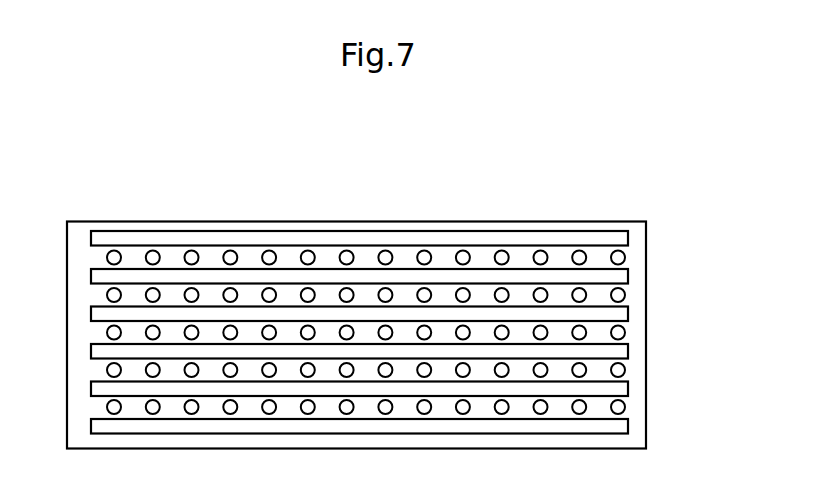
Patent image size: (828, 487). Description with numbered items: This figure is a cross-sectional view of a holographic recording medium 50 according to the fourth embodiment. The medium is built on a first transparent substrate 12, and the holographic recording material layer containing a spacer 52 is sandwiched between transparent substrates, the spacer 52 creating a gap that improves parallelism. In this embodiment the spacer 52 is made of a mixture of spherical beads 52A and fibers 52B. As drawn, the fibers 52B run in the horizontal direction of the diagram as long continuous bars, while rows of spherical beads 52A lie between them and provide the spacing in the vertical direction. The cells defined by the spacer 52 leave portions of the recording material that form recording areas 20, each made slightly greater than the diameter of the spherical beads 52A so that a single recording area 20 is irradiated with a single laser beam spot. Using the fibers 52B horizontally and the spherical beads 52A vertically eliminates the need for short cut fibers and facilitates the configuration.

The holographic recording medium 50 is at (385, 303).
The first transparent substrate 12 is at (632, 440).
The recording area 20 is at (444, 257).
The spacer 52 is at (359, 327).
The spherical beads 52A is at (347, 407).
The fibers 52B is at (240, 237).